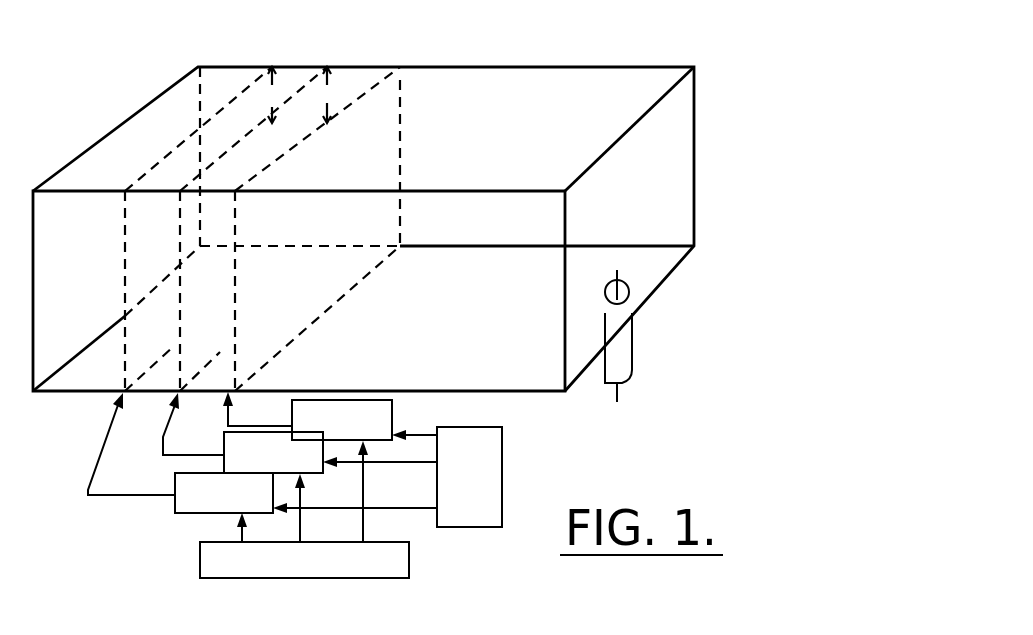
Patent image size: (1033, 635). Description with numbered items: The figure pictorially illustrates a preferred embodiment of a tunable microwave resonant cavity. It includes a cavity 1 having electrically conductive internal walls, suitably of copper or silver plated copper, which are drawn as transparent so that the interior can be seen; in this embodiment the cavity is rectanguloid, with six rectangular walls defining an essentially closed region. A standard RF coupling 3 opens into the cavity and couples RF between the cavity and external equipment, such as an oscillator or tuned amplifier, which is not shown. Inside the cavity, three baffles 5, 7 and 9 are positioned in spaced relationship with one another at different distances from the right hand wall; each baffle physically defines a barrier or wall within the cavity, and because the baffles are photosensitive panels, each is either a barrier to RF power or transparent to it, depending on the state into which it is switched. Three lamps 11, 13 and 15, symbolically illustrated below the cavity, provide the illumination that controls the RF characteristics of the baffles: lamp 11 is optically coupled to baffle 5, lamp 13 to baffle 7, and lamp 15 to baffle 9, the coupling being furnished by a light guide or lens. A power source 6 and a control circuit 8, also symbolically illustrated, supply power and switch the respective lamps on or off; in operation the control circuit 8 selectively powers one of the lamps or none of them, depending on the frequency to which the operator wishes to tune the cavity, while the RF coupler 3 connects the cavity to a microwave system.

The cavity 1 is at (566, 64).
The RF coupling 3 is at (632, 372).
The baffle 5 is at (134, 186).
The baffle 7 is at (246, 136).
The baffle 9 is at (275, 158).
The power source 6 is at (409, 566).
The control circuit 8 is at (502, 487).
The lamp 11 is at (176, 514).
The lamp 13 is at (225, 453).
The lamp 15 is at (292, 419).